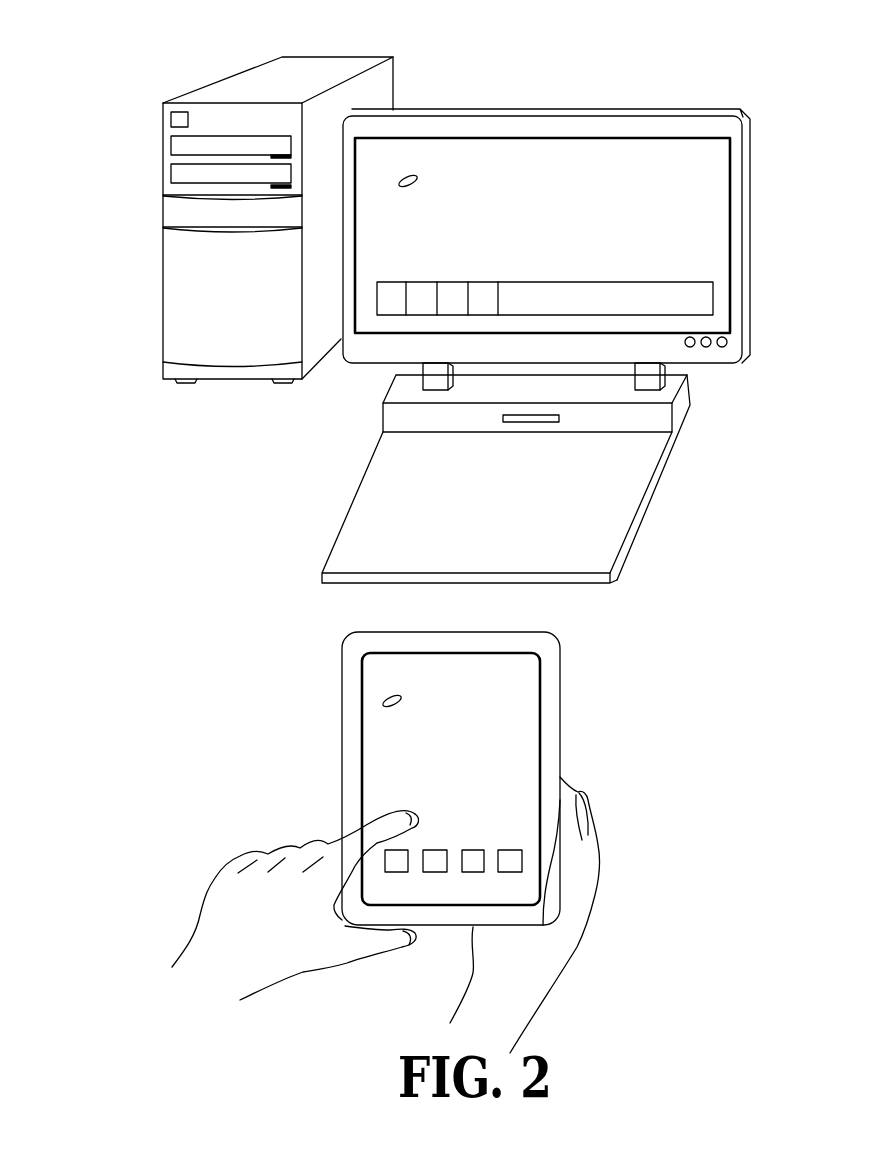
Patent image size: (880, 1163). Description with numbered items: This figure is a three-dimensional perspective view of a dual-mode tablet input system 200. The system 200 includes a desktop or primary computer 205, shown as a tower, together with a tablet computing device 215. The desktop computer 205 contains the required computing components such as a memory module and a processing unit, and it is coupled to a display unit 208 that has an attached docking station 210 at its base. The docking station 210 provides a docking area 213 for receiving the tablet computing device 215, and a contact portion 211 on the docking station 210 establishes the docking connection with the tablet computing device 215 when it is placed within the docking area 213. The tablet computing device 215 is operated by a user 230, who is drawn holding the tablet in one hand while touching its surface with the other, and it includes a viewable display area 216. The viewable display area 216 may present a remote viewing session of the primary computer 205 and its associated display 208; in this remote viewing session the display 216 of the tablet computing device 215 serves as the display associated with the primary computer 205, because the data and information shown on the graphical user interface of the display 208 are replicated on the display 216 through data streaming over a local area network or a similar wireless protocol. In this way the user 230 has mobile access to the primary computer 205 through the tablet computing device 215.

The dual-mode tablet input system 200 is at (135, 49).
The desktop computer 205 is at (382, 98).
The display unit 208 is at (710, 112).
The docking station 210 is at (501, 479).
The contact portion 211 is at (533, 419).
The docking area 213 is at (380, 486).
The tablet computing device 215 is at (560, 640).
The viewable display area 216 is at (524, 723).
The user 230 is at (333, 970).